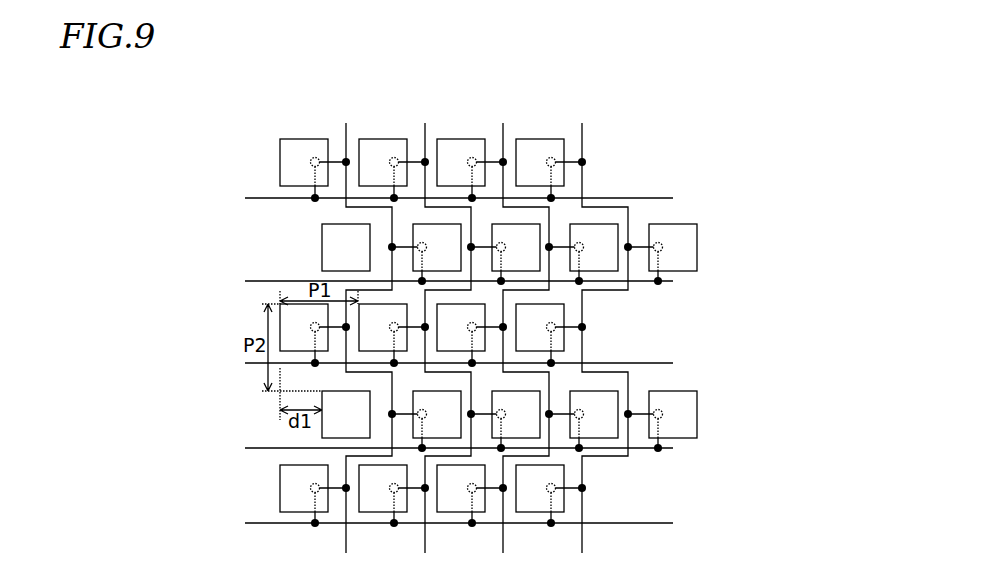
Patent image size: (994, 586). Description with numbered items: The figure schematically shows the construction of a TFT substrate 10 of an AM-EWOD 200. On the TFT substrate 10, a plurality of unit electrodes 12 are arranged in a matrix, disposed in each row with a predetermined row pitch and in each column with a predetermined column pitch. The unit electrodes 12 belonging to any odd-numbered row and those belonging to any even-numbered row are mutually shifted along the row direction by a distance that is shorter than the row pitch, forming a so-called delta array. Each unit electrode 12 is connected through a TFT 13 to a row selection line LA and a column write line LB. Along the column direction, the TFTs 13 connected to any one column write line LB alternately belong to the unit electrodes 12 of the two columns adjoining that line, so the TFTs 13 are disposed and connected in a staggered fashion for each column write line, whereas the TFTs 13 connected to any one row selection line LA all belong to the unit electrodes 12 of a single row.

The AM-EWOD 200 is at (751, 136).
The TFT substrate 10 is at (697, 162).
The unit electrode 12 is at (298, 143).
The TFT 13 is at (310, 162).